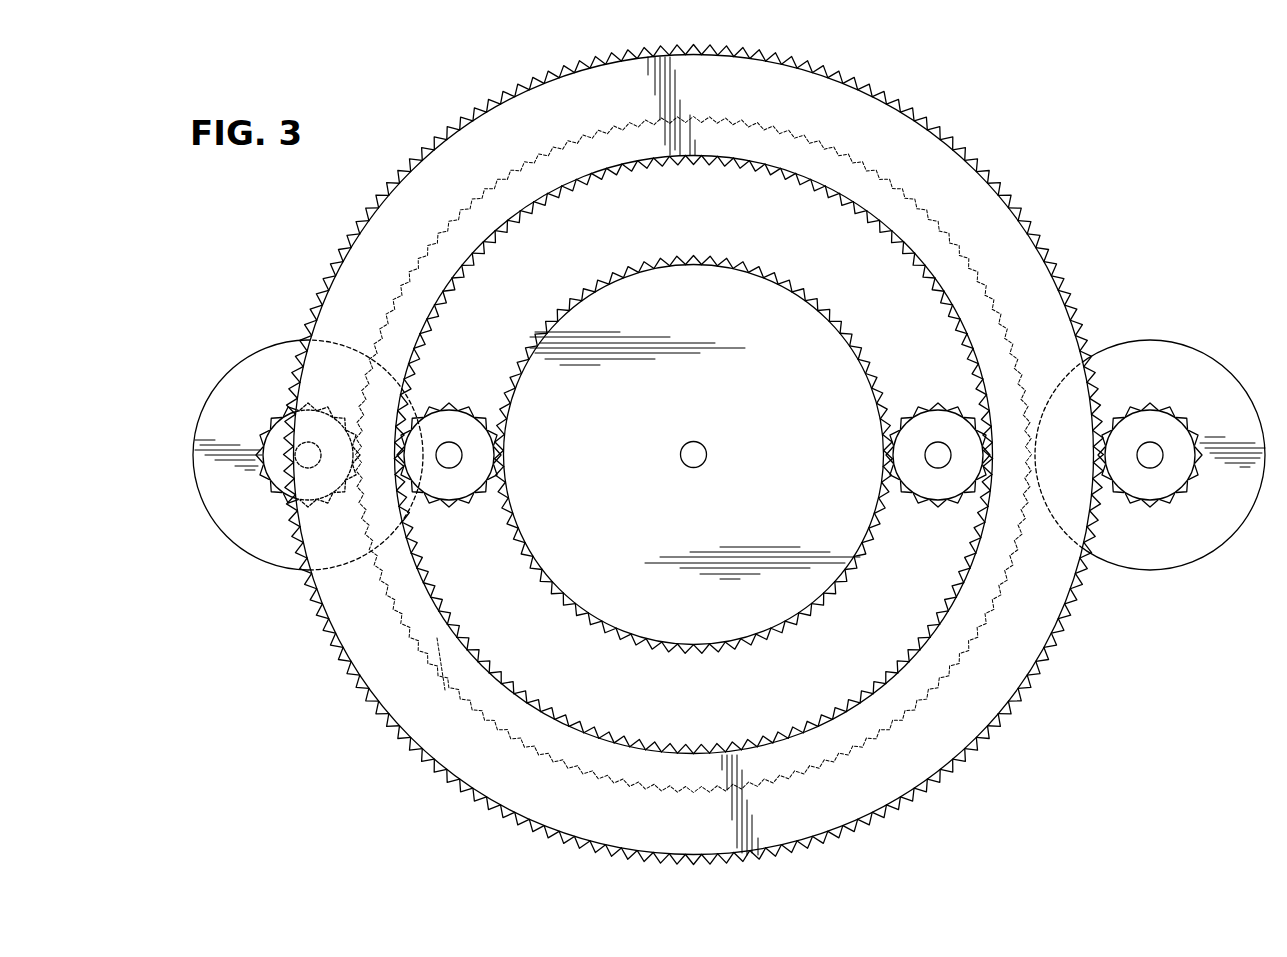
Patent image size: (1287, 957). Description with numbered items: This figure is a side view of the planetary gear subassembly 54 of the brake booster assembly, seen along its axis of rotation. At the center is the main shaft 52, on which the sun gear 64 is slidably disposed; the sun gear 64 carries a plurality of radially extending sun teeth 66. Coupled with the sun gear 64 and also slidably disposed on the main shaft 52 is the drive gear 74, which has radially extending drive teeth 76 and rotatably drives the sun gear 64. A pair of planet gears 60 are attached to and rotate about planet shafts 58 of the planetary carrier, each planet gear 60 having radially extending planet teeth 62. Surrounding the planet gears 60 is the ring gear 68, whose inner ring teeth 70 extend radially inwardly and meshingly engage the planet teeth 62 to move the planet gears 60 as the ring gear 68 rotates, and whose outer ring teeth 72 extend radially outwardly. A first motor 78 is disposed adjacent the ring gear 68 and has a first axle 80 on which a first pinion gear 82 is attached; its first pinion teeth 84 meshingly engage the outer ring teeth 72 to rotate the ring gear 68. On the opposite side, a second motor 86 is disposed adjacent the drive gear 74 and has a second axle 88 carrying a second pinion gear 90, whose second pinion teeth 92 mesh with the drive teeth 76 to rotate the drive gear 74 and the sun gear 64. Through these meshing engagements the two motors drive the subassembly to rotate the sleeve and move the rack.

The main shaft 52 is at (703, 445).
The planetary gear subassembly 54 is at (1063, 211).
The planet shafts 58 is at (450, 442).
The planet gears 60 is at (481, 460).
The planet teeth 62 is at (455, 499).
The sun gear 64 is at (652, 501).
The sun teeth 66 is at (783, 626).
The ring gear 68 is at (1004, 679).
The inner ring teeth 70 is at (488, 672).
The outer ring teeth 72 is at (455, 786).
The drive gear 74 is at (437, 638).
The drive teeth 76 is at (456, 700).
The first motor 78 is at (1152, 551).
The first axle 80 is at (1150, 442).
The first pinion gear 82 is at (1172, 425).
The first pinion teeth 84 is at (1194, 472).
The second motor 86 is at (262, 536).
The second axle 88 is at (308, 440).
The second pinion gear 90 is at (278, 430).
The second pinion teeth 92 is at (270, 488).